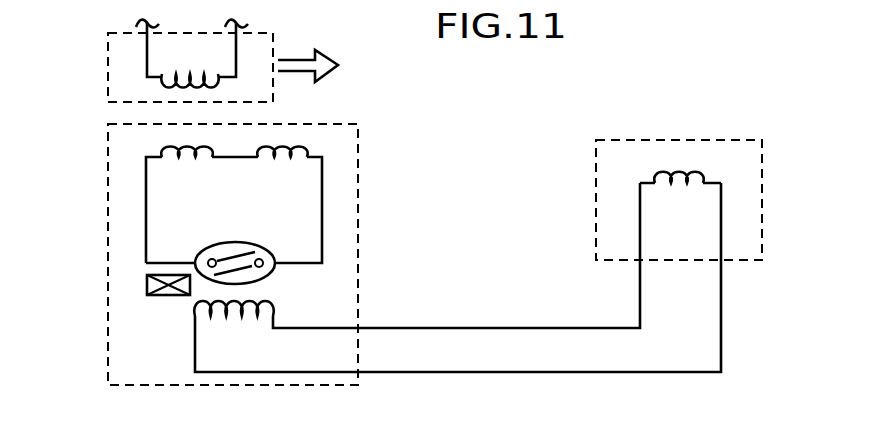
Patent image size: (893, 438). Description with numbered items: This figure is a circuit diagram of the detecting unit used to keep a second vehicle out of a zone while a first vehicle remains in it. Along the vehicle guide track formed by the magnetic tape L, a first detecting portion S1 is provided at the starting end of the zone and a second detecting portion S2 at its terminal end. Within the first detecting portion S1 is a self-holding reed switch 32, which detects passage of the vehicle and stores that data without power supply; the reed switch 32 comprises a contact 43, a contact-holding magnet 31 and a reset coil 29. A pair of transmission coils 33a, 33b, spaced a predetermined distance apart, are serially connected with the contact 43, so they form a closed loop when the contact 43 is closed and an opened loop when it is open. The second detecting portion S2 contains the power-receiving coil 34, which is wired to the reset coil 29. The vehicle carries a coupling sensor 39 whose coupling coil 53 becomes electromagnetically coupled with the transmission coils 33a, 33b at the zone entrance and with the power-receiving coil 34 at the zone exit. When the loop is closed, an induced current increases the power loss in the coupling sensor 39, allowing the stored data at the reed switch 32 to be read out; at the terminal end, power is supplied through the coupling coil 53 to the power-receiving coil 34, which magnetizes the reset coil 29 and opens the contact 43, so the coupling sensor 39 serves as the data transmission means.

The reset coil 29 is at (276, 305).
The contact-holding magnet 31 is at (170, 295).
The reed switch 32 is at (303, 280).
The transmission coil 33a is at (162, 150).
The transmission coil 33b is at (297, 147).
The power-receiving coil 34 is at (686, 170).
The coupling sensor 39 is at (108, 52).
The contact 43 is at (237, 243).
The coupling coil 53 is at (160, 82).
The first detecting portion S1 is at (358, 210).
The second detecting portion S2 is at (762, 222).
The magnetic tape L is at (462, 421).